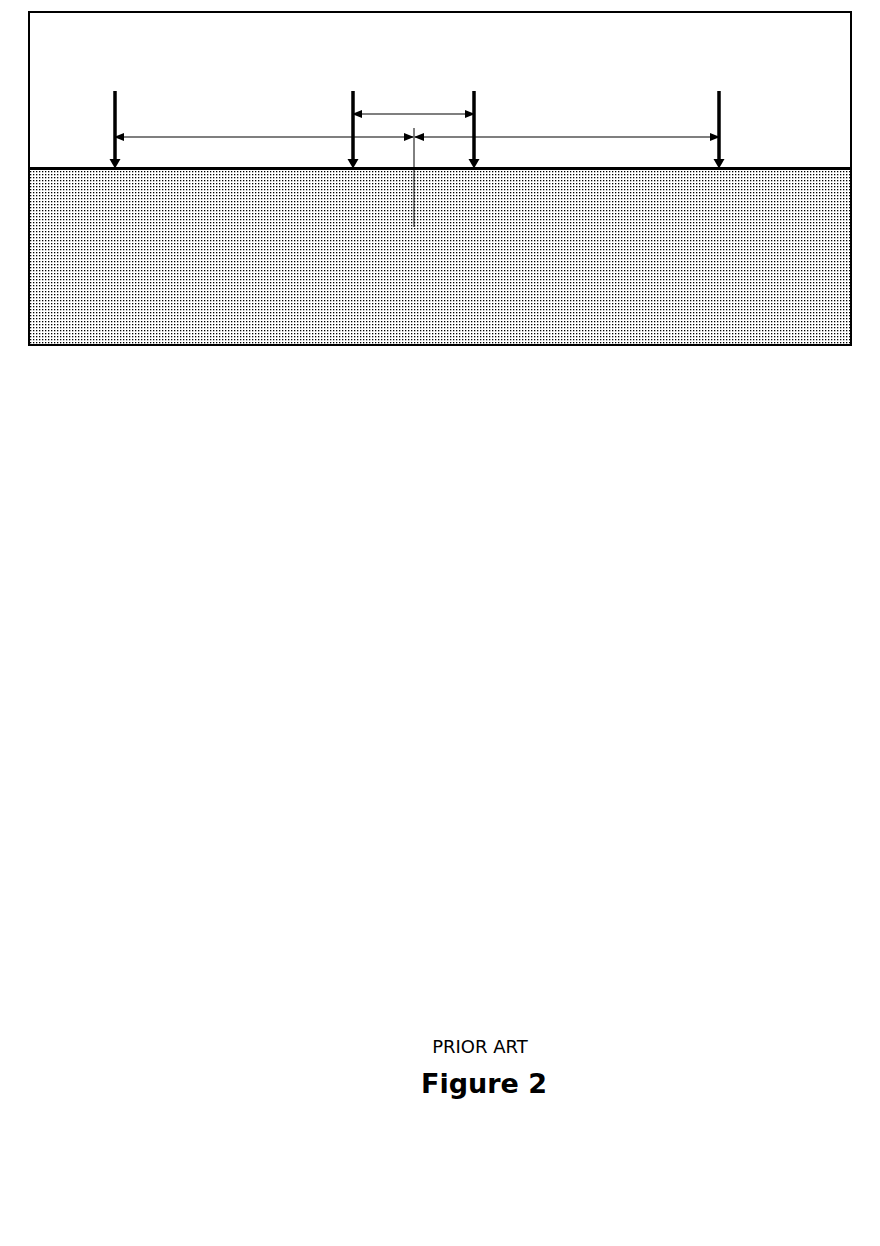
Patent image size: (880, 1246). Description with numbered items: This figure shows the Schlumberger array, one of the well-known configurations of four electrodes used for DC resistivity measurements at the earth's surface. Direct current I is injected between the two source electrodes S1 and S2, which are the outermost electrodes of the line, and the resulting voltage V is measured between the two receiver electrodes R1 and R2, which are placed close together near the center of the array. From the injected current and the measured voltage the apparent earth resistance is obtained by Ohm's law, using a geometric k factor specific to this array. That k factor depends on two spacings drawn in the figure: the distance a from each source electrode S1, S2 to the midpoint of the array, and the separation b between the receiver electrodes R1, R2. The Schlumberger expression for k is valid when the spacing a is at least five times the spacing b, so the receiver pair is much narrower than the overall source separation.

The source electrode S1 is at (115, 114).
The source electrode S2 is at (719, 114).
The receiver electrode R1 is at (352, 114).
The receiver electrode R2 is at (473, 114).
The source-to-midpoint spacing a is at (417, 123).
The receiver electrode spacing b is at (413, 102).